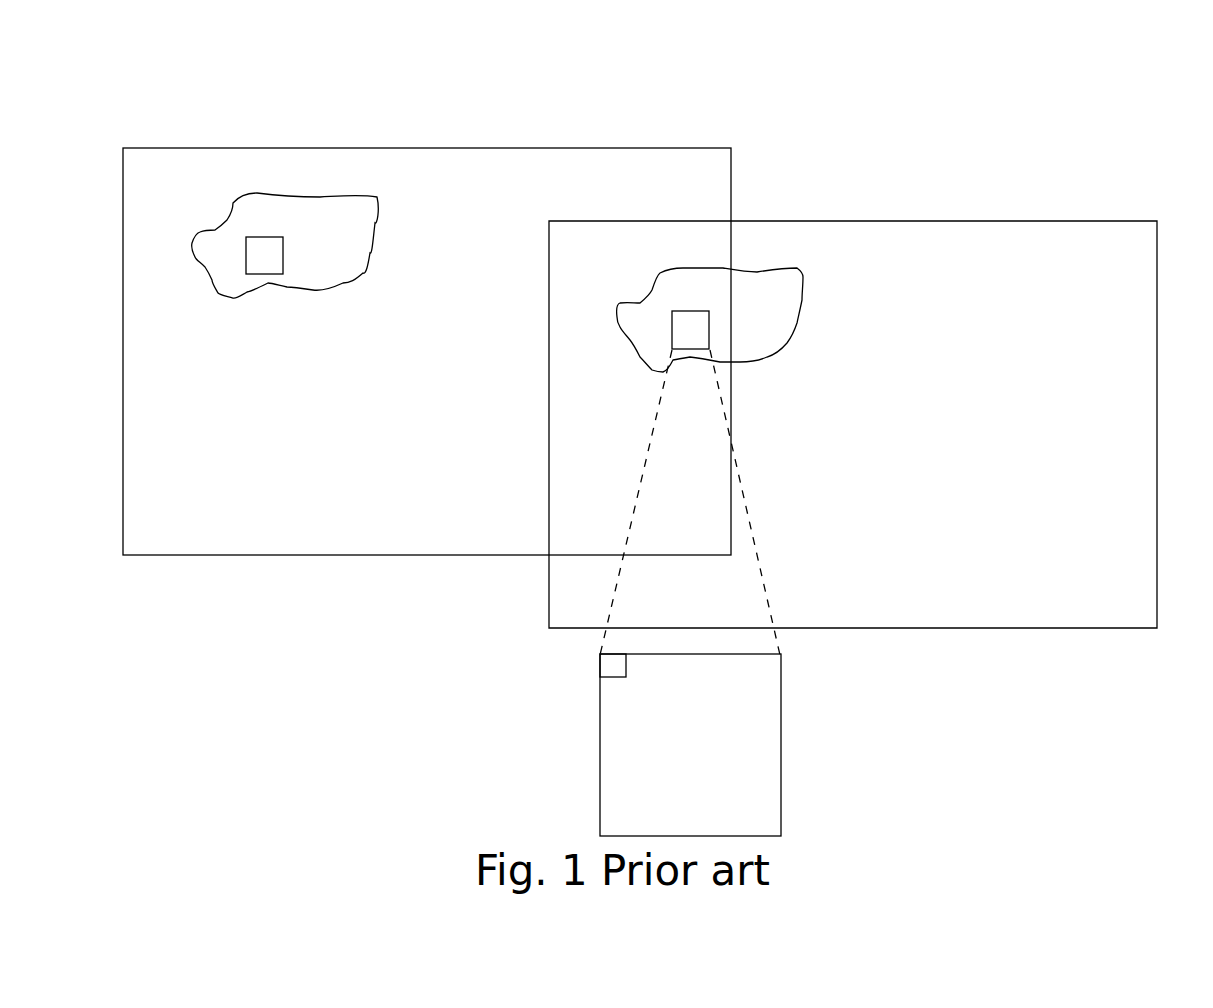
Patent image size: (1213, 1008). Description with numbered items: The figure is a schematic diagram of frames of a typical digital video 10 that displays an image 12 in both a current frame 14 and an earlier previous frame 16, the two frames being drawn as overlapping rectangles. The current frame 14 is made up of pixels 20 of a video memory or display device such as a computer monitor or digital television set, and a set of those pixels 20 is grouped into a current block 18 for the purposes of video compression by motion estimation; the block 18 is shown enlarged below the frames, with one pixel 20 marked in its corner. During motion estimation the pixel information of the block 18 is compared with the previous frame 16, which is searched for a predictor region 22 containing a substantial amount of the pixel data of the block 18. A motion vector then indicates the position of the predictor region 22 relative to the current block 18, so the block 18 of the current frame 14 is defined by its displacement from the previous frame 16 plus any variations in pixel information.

The digital video 10 is at (1054, 108).
The image 12 is at (282, 193).
The current frame 14 is at (1068, 221).
The previous frame 16 is at (568, 147).
The current block 18 is at (699, 323).
The pixels 20 is at (610, 668).
The predictor region 22 is at (273, 250).